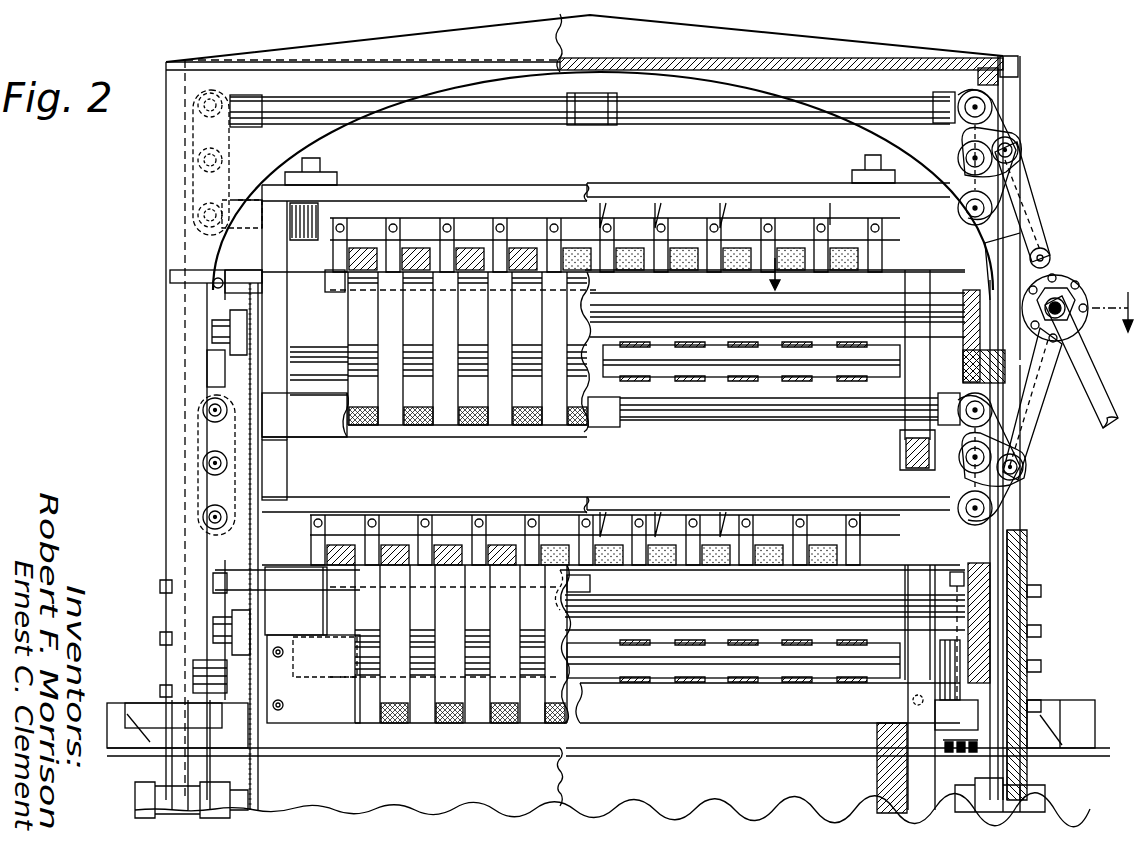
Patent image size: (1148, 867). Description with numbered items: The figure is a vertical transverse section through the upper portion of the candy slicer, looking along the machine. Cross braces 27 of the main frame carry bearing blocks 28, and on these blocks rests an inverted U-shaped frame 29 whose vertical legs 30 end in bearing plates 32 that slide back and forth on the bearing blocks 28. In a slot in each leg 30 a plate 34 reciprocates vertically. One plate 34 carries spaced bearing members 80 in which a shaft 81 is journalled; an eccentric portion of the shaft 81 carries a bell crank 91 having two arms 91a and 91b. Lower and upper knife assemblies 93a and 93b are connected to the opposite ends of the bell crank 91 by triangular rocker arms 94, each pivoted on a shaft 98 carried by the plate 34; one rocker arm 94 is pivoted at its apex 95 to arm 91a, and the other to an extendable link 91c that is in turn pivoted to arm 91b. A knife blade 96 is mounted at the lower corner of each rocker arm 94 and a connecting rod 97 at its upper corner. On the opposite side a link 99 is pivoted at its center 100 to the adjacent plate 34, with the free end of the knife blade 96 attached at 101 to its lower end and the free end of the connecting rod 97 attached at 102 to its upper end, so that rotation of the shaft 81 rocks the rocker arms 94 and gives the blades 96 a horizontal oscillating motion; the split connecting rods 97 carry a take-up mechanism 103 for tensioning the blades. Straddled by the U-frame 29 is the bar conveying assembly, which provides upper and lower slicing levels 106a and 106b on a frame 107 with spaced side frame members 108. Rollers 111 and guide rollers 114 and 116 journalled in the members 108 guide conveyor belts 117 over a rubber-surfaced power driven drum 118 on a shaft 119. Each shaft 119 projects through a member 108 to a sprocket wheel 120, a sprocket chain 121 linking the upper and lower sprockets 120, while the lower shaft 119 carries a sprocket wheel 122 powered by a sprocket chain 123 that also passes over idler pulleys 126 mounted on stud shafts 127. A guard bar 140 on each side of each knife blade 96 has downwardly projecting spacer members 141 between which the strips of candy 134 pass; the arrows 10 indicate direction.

The direction of movement 10 is at (848, 444).
The cross brace 27 is at (1098, 772).
The bearing block 28 is at (138, 705).
The inverted U-shaped frame 29 is at (164, 196).
The leg 30 is at (168, 282).
The bearing plate 32 is at (150, 712).
The plate 34 is at (175, 240).
The bearing member 80 is at (1088, 292).
The shaft 81 is at (1070, 270).
The bell crank 91 is at (1042, 392).
The arm 91a is at (1048, 432).
The arm 91b is at (1048, 250).
The extendable link 91c is at (1030, 182).
The lower knife assembly 93a is at (866, 490).
The upper knife assembly 93b is at (832, 174).
The rocker arm 94 is at (998, 118).
The pivot 95 is at (1014, 146).
The knife blade 96 is at (700, 198).
The connecting rod 97 is at (679, 112).
The shaft 98 is at (958, 160).
The link 99 is at (192, 148).
The pivot 100 is at (228, 168).
The pivot 101 is at (218, 228).
The pivot 102 is at (195, 112).
The take-up mechanism 103 is at (601, 110).
The upper candy slicing level 106a is at (318, 270).
The lower candy slicing level 106b is at (326, 547).
The frame 107 is at (516, 184).
The side frame member 108 is at (905, 440).
The roller 111 is at (332, 292).
The guide roller 114 is at (770, 678).
The guide roller 116 is at (375, 424).
The conveyor belt 117 is at (480, 424).
The power driven drum 118 is at (336, 340).
The shaft 119 is at (258, 300).
The sprocket wheel 120 is at (228, 326).
The sprocket chain 121 is at (205, 372).
The sprocket wheel 122 is at (955, 572).
The sprocket chain 123 is at (1008, 662).
The idler pulley 126 is at (948, 752).
The stud shaft 127 is at (935, 716).
The strips of candy 134 is at (362, 248).
The guard bar 140 is at (420, 226).
The spacer member 141 is at (395, 226).